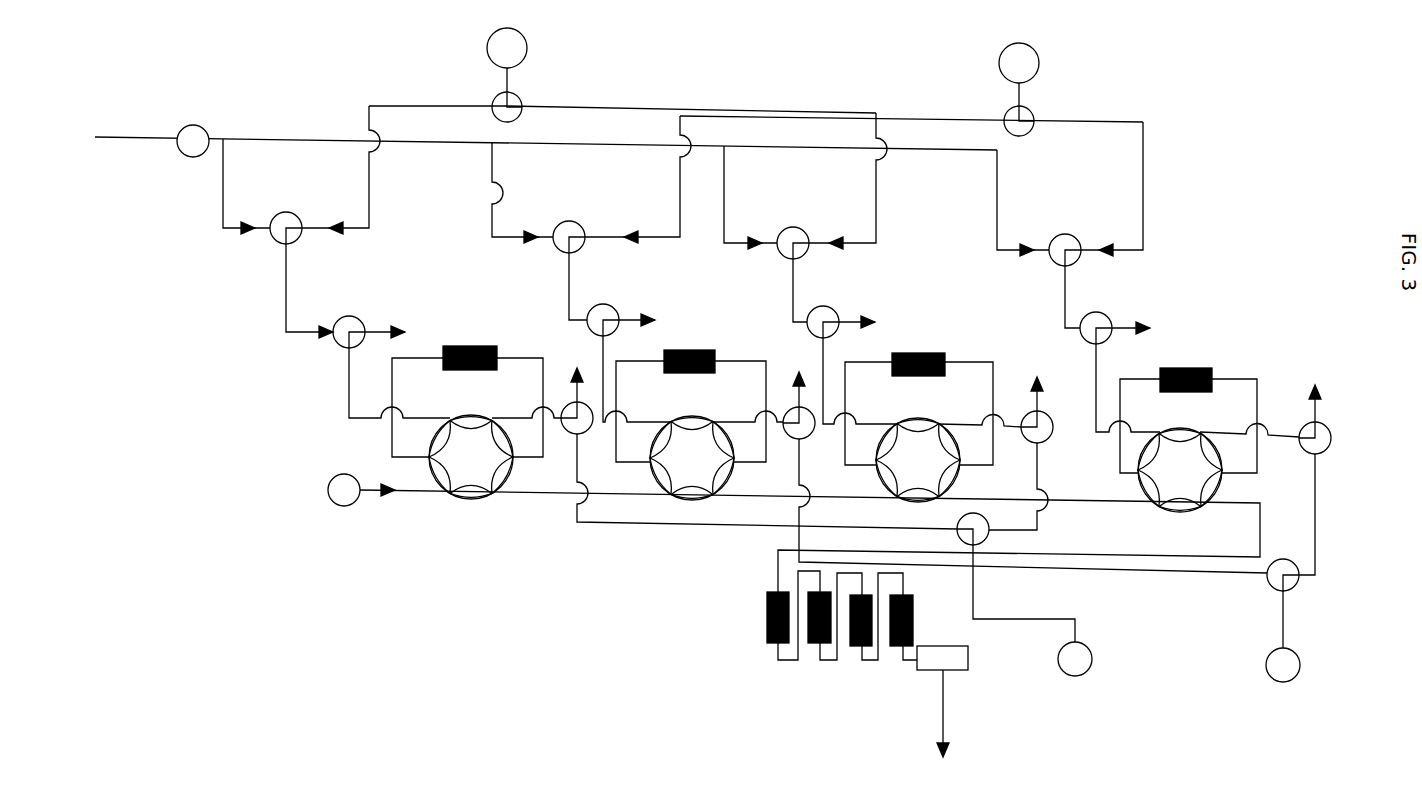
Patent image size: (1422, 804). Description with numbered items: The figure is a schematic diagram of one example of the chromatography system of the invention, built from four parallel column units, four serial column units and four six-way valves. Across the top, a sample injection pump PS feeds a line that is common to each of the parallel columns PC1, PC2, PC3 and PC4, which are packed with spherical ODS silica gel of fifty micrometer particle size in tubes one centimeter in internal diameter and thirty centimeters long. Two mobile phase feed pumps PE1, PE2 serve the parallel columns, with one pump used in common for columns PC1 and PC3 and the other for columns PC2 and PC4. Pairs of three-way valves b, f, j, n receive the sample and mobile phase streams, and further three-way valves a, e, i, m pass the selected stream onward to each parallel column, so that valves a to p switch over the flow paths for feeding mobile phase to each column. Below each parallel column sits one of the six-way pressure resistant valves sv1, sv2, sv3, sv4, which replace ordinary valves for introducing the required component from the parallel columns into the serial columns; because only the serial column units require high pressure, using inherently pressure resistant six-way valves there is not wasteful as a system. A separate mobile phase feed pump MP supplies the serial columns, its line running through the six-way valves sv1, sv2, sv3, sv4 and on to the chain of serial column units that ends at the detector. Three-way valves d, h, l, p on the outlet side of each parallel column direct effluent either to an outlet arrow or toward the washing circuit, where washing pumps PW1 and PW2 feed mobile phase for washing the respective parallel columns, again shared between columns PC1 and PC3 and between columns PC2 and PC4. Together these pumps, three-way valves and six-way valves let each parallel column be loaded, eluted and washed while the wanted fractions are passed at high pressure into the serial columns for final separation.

The sample injection pump PS is at (193, 141).
The mobile phase feed pump PE1 is at (507, 75).
The mobile phase feed pump PE2 is at (1019, 89).
The mobile phase feed pump MP is at (794, 533).
The washing mobile phase feed pump PW1 is at (1024, 594).
The washing mobile phase feed pump PW2 is at (1283, 620).
The 3-way valve a is at (345, 296).
The 3-way valve b is at (301, 175).
The 3-way valve d is at (724, 448).
The 3-way valve e is at (612, 294).
The 3-way valve f is at (591, 184).
The 3-way valve h is at (990, 472).
The 3-way valve i is at (834, 298).
The 3-way valve j is at (805, 186).
The 3-way valve l is at (1001, 453).
The 3-way valve m is at (1107, 305).
The 3-way valve n is at (1070, 194).
The 3-way valve p is at (1275, 480).
The parallel column PC1 is at (446, 391).
The parallel column PC2 is at (684, 395).
The parallel column PC3 is at (908, 396).
The parallel column PC4 is at (1176, 408).
The 6-way pressure resistant valve sv1 is at (471, 447).
The 6-way pressure resistant valve sv2 is at (692, 448).
The 6-way pressure resistant valve sv3 is at (918, 452).
The 6-way pressure resistant valve sv4 is at (1180, 461).
The element detector is at (867, 664).